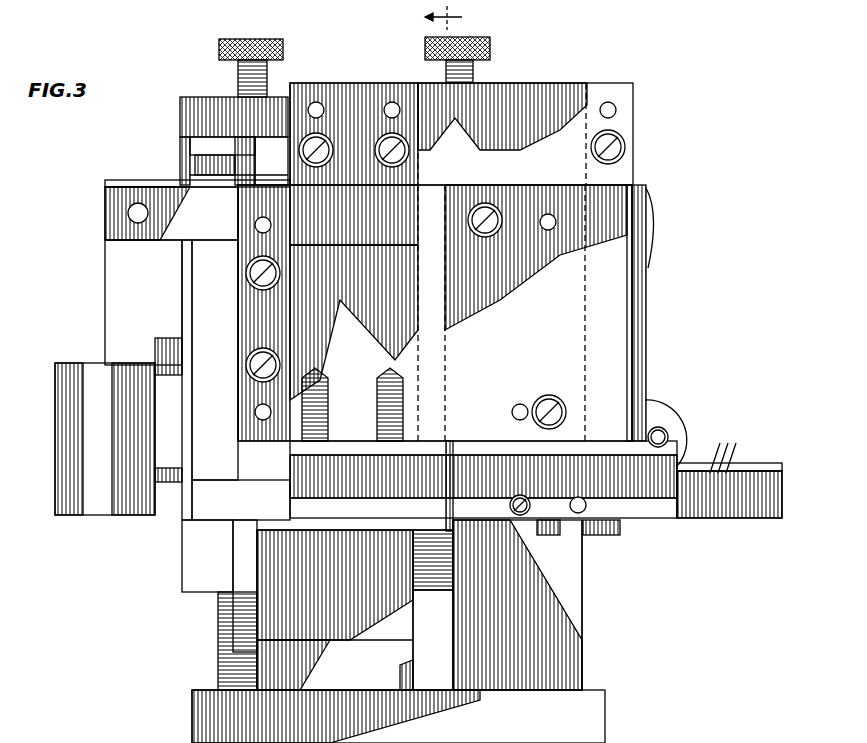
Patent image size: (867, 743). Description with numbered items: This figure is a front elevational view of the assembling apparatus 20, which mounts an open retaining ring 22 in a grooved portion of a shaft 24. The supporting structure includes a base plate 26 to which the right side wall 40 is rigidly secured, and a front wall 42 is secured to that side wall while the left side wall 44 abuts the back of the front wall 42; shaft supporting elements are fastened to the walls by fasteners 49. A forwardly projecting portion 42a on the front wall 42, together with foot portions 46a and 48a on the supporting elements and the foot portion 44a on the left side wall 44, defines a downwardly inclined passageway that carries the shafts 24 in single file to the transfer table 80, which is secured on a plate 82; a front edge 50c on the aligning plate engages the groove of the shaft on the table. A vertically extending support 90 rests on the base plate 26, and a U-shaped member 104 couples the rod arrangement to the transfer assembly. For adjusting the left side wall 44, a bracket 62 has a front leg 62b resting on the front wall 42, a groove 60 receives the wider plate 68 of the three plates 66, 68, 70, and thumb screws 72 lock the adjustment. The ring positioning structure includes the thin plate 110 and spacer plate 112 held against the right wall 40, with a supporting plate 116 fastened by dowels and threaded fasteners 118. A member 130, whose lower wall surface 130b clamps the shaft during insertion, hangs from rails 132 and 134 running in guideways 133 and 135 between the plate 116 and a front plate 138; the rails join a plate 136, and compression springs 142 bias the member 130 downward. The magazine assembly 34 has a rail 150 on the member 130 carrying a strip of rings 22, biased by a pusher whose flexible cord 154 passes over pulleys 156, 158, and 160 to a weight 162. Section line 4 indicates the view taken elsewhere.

The section line 4 is at (453, 18).
The thumb screws 72 is at (234, 40).
The L-shaped bracket 62 is at (180, 108).
The front leg of bracket 62b is at (222, 100).
The groove 60 is at (195, 162).
The plate 68 is at (234, 163).
The plate 70 is at (267, 160).
The plate 66 is at (263, 142).
The pulley 160 is at (134, 186).
The plate 136 is at (571, 84).
The supporting plate 116 is at (107, 214).
The rail 134 is at (628, 302).
The front plate 138 is at (615, 332).
The dowels and threaded fasteners 118 is at (548, 212).
The pulley 158 is at (660, 206).
The rail 132 is at (418, 330).
The guideway 133 is at (410, 356).
The guideway 135 is at (590, 363).
The compression springs 142 is at (373, 388).
The spacer plate 112 is at (452, 376).
The thin metal plate 110 is at (444, 378).
The flexible cord 154 is at (107, 320).
The left side wall 44 is at (184, 270).
The front wall 42 is at (197, 300).
The fasteners 49 is at (168, 378).
The weight 162 is at (62, 458).
The member 130 is at (640, 522).
The pulley 156 is at (670, 410).
The rail 150 is at (740, 518).
The retaining ring 22 is at (725, 446).
The magazine assembly 34 is at (717, 533).
The forwardly projecting portion 42a is at (197, 505).
The foot portion 44a is at (185, 558).
The shaft 24 is at (240, 558).
The foot portion 48a is at (220, 610).
The vertically extending support 90 is at (260, 625).
The U-shaped member 104 is at (260, 632).
The transfer table 80 is at (262, 644).
The plate 82 is at (270, 670).
The lower wall surface 130b is at (430, 550).
The front edge 50c is at (455, 520).
The foot portion 46a is at (443, 618).
The right side wall 40 is at (583, 674).
The base plate 26 is at (202, 713).
The assembling apparatus 20 is at (84, 607).